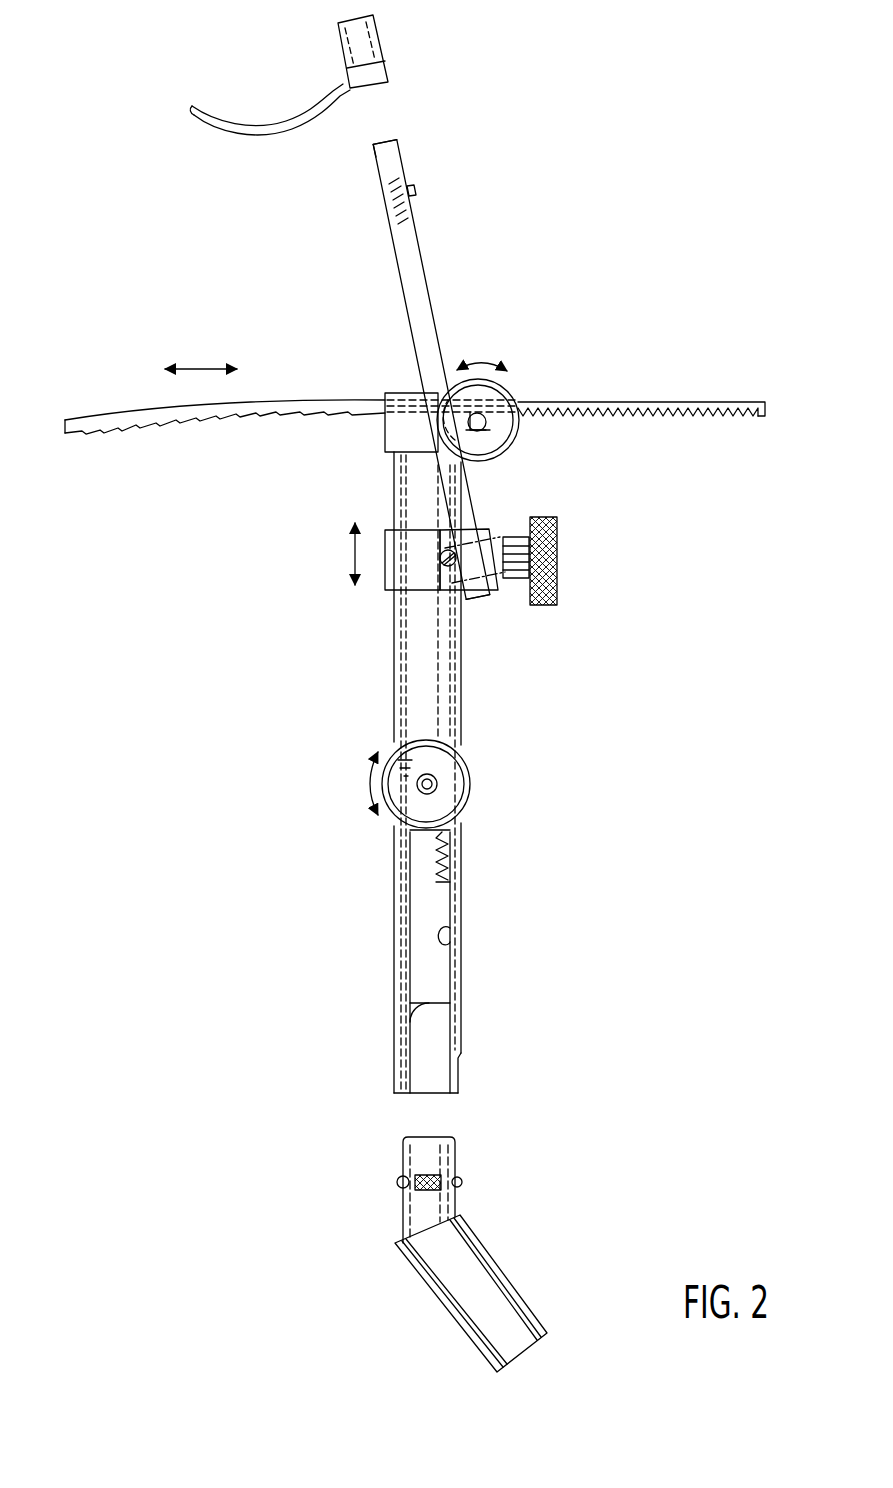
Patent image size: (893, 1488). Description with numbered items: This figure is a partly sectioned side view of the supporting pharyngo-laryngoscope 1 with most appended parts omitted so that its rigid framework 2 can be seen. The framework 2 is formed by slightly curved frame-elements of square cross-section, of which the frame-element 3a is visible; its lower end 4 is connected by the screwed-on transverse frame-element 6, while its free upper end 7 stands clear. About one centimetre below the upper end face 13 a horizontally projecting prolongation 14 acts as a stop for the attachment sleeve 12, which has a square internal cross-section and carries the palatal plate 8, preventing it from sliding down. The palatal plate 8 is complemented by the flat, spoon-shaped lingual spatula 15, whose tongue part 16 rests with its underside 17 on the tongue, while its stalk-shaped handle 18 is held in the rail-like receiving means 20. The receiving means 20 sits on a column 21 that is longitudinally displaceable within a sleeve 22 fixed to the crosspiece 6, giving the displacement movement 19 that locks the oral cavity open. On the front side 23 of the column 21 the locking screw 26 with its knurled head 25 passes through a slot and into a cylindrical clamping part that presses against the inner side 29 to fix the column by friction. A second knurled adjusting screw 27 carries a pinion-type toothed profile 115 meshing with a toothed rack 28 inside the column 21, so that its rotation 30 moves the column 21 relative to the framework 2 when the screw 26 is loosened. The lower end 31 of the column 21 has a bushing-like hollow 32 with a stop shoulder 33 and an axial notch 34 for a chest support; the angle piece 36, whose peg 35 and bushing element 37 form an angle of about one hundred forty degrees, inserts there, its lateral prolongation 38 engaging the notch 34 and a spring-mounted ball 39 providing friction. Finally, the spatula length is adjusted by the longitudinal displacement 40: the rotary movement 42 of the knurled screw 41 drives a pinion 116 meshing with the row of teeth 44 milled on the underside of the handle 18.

The pharyngo-laryngoscope 1 is at (534, 288).
The framework 2 is at (430, 257).
The frame-element 3a is at (392, 221).
The lower end of frame-element 4 is at (479, 599).
The transverse frame-element 6 is at (499, 595).
The upper end of frame-element 7 is at (391, 160).
The palatal plate 8 is at (266, 114).
The attachment sleeve 12 is at (380, 34).
The upper end face of frame-element 13 is at (374, 143).
The prolongation 14 is at (416, 190).
The lingual spatula 15 is at (250, 420).
The tongue part 16 is at (100, 415).
The underside of spatula 17 is at (136, 426).
The spatula handle 18 is at (626, 400).
The displacement movement 19 is at (346, 553).
The receiving means 20 is at (396, 432).
The column 21 is at (397, 655).
The sleeve 22 is at (416, 578).
The front side of column 23 is at (462, 986).
The knurled head 25 is at (557, 572).
The locking screw 26 is at (515, 537).
The knurled adjusting screw 27 is at (470, 782).
The toothed rack 28 is at (462, 846).
The inner side of column 29 is at (452, 942).
The rotation of adjusting screw 30 is at (370, 780).
The lower end of column 31 is at (398, 1068).
The bushing-like hollow 32 is at (440, 1034).
The stop shoulder 33 is at (410, 1026).
The notch 34 is at (460, 1074).
The peg 35 is at (456, 1152).
The angle piece 36 is at (500, 1262).
The bushing element 37 is at (444, 1290).
The lateral prolongation 38 is at (462, 1182).
The spring-mounted ball 39 is at (397, 1182).
The longitudinal displacement 40 is at (203, 366).
The knurled screw 41 is at (519, 440).
The rotary movement 42 is at (494, 367).
The row of teeth 44 is at (684, 416).
The pinion-type toothed profile 115 is at (413, 790).
The pinion 116 is at (488, 416).